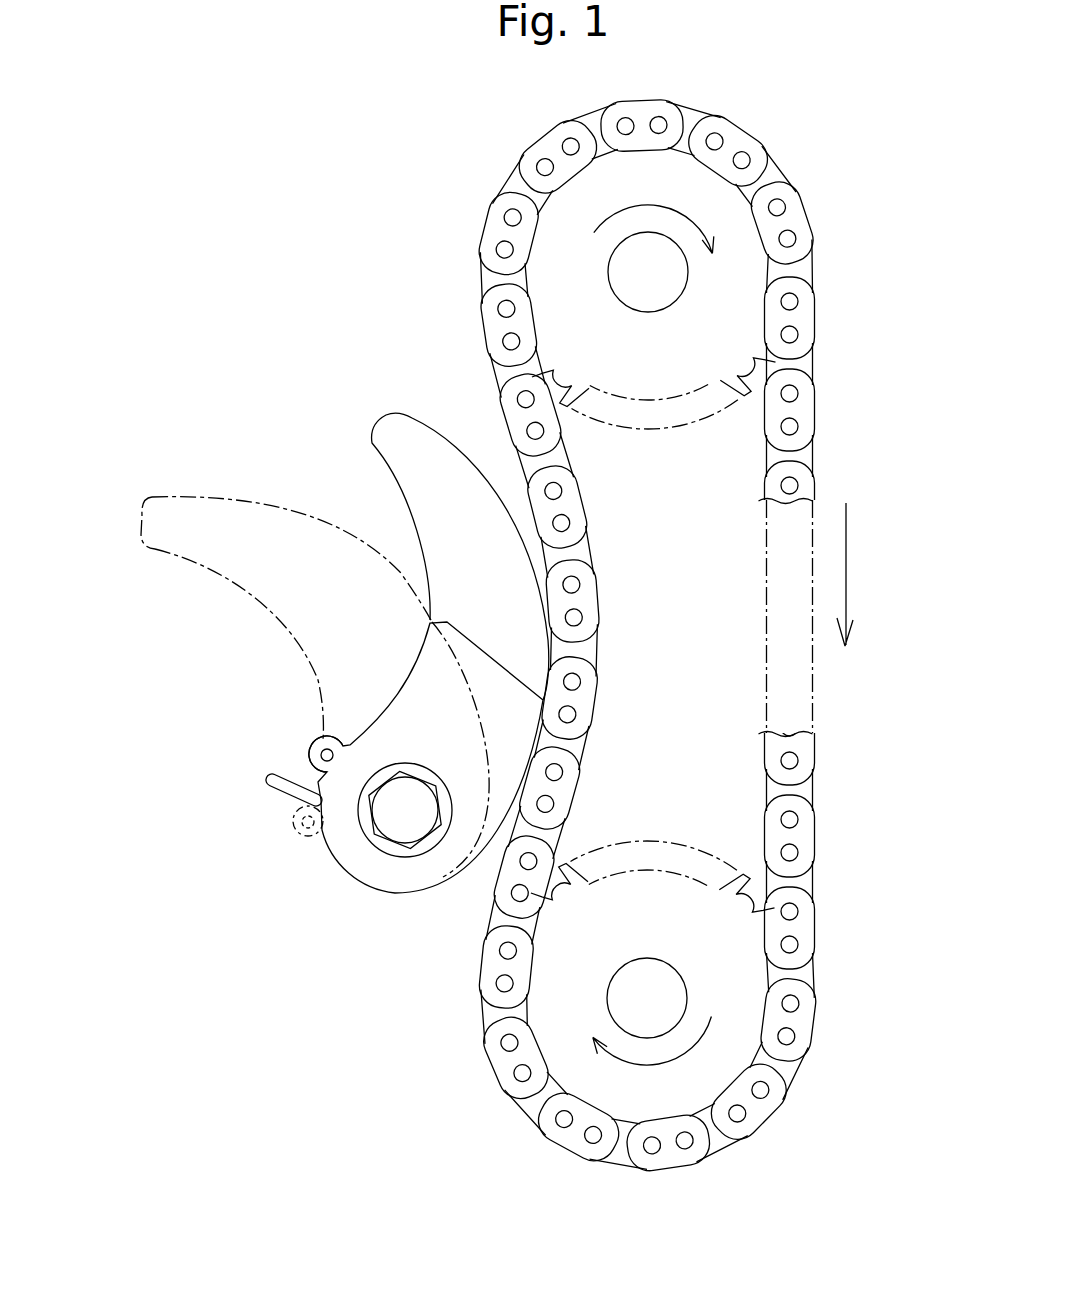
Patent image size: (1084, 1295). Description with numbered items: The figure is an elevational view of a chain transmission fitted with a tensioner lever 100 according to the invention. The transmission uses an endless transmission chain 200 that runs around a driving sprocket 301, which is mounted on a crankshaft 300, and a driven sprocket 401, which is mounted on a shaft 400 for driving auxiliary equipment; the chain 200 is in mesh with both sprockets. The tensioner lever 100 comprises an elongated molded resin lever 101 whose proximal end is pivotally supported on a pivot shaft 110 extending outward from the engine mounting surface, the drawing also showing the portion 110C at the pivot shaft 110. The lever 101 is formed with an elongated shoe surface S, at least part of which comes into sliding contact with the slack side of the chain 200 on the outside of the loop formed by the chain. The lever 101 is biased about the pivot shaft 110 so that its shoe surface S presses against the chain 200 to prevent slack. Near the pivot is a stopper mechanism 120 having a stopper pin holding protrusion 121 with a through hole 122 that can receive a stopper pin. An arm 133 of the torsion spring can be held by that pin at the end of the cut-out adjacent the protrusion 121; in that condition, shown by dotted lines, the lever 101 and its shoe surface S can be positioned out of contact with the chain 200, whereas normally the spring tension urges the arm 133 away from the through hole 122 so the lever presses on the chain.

The tensioner lever 100 is at (356, 422).
The lever 101 is at (370, 907).
The pivot shaft 110 is at (397, 825).
The hexagonal hole of pivot boss 110C is at (430, 847).
The stopper mechanism 120 is at (218, 804).
The stopper pin holding protrusion 121 is at (321, 751).
The through hole 122 is at (313, 762).
The arm 133 is at (270, 783).
The transmission chain 200 is at (793, 217).
The crankshaft 300 is at (649, 975).
The driving sprocket 301 is at (740, 983).
The shaft 400 is at (645, 292).
The driven sprocket 401 is at (740, 272).
The shoe surface S is at (423, 421).